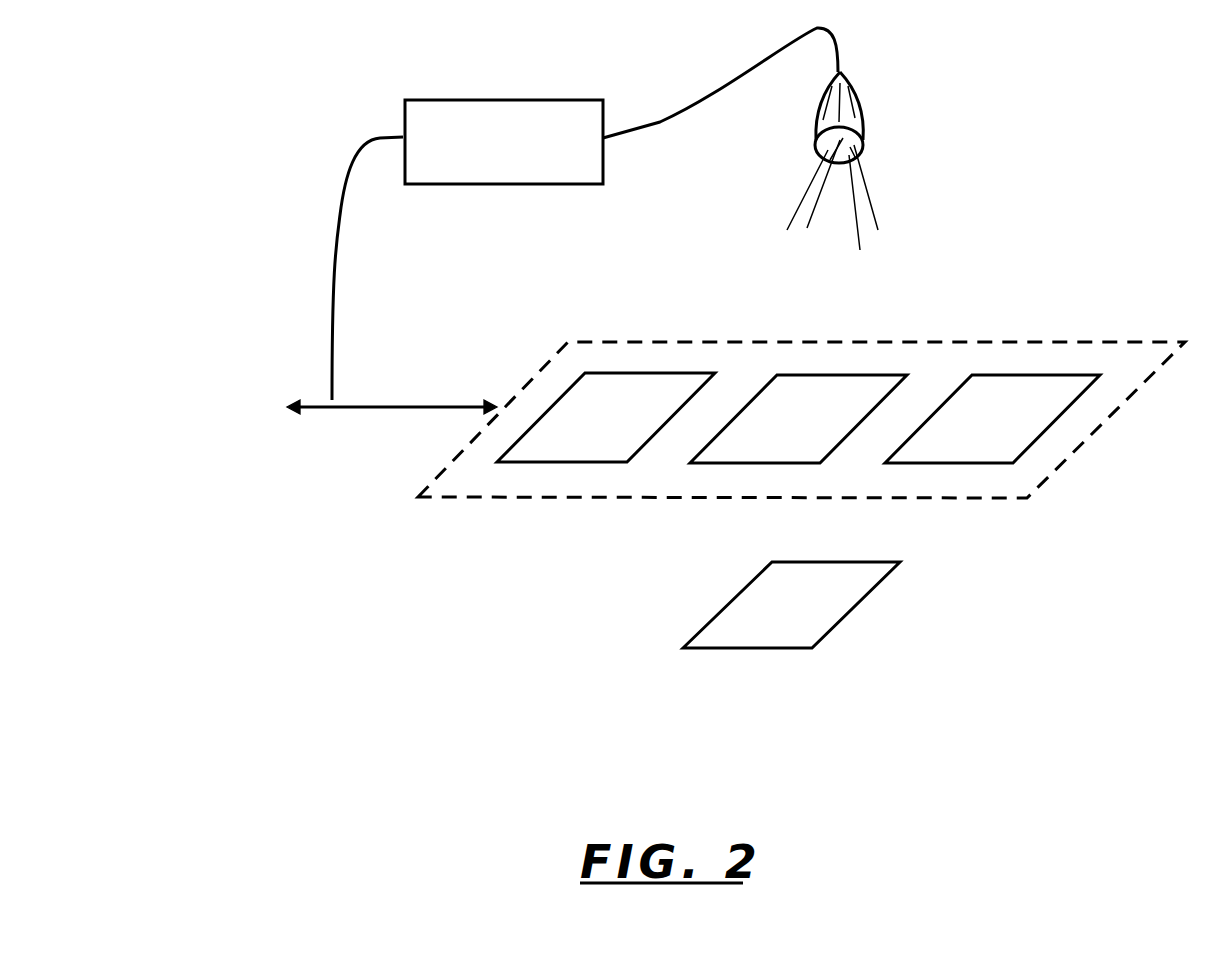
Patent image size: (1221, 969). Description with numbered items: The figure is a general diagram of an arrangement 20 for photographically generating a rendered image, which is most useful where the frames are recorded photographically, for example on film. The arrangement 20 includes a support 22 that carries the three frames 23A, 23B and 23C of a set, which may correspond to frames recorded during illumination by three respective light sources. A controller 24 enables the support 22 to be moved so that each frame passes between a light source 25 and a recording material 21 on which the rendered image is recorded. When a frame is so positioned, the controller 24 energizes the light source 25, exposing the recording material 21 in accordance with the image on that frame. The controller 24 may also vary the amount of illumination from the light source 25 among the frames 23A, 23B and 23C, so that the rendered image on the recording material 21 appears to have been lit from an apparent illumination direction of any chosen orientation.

The arrangement 20 is at (696, 349).
The recording material 21 is at (862, 603).
The support 22 is at (1078, 448).
The frame 23A is at (552, 463).
The frame 23B is at (760, 465).
The frame 23C is at (962, 465).
The controller 24 is at (504, 142).
The light source 25 is at (857, 88).